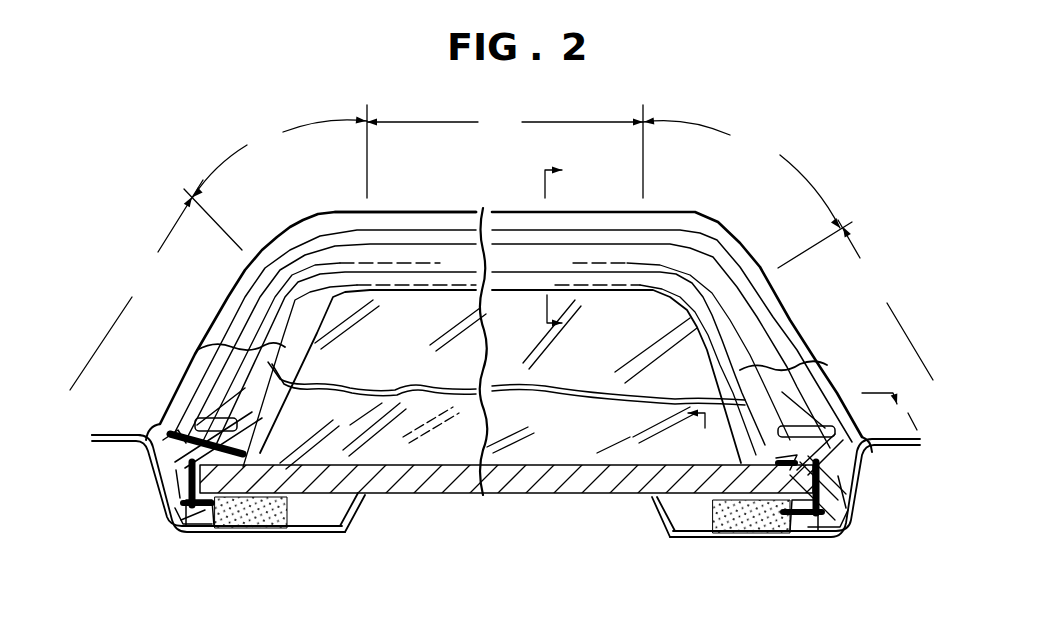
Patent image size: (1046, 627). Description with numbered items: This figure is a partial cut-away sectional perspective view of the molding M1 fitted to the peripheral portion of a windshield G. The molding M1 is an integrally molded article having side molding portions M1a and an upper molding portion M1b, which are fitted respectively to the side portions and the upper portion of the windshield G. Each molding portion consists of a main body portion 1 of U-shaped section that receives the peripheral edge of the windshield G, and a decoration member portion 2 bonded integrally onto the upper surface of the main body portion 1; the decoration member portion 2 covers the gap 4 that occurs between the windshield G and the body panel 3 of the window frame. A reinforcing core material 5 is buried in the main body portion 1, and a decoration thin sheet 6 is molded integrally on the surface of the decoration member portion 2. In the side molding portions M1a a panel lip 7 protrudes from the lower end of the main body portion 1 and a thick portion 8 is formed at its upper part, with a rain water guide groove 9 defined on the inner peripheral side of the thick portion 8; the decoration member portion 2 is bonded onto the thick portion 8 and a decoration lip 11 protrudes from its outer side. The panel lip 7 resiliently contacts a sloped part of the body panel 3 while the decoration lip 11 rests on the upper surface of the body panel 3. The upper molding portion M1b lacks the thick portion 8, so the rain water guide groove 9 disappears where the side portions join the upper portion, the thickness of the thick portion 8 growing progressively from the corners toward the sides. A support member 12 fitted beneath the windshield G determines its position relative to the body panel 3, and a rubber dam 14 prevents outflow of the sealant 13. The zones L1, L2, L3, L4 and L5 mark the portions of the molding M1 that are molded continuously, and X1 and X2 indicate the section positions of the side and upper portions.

The main body portion 1 is at (168, 473).
The decoration member portion 2 is at (233, 443).
The body panel 3 is at (124, 424).
The gap 4 is at (177, 527).
The reinforcing core material 5 is at (180, 533).
The decoration thin sheet 6 is at (240, 421).
The panel lip 7 is at (168, 498).
The thick portion 8 is at (175, 445).
The rain water guide groove 9 is at (300, 358).
The decoration lip 11 is at (160, 417).
The support member 12 is at (203, 527).
The sealant 13 is at (257, 520).
The rubber dam 14 is at (312, 528).
The windshield G is at (450, 472).
The molding M1 is at (807, 160).
The side molding portion M1a is at (193, 358).
The upper molding portion M1b is at (435, 221).
The zone L1 is at (885, 300).
The zone L2 is at (747, 193).
The zone L3 is at (505, 151).
The zone L4 is at (275, 184).
The zone L5 is at (136, 285).
The section line X1 is at (802, 426).
The section line X2 is at (572, 244).